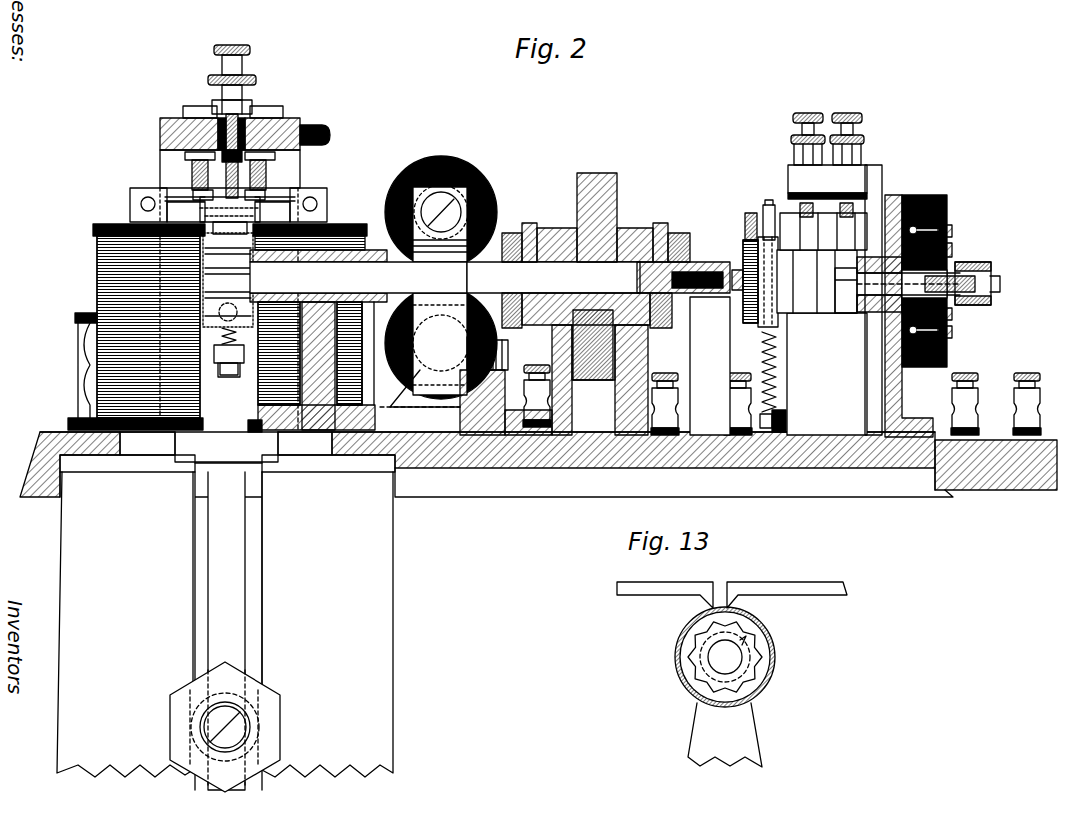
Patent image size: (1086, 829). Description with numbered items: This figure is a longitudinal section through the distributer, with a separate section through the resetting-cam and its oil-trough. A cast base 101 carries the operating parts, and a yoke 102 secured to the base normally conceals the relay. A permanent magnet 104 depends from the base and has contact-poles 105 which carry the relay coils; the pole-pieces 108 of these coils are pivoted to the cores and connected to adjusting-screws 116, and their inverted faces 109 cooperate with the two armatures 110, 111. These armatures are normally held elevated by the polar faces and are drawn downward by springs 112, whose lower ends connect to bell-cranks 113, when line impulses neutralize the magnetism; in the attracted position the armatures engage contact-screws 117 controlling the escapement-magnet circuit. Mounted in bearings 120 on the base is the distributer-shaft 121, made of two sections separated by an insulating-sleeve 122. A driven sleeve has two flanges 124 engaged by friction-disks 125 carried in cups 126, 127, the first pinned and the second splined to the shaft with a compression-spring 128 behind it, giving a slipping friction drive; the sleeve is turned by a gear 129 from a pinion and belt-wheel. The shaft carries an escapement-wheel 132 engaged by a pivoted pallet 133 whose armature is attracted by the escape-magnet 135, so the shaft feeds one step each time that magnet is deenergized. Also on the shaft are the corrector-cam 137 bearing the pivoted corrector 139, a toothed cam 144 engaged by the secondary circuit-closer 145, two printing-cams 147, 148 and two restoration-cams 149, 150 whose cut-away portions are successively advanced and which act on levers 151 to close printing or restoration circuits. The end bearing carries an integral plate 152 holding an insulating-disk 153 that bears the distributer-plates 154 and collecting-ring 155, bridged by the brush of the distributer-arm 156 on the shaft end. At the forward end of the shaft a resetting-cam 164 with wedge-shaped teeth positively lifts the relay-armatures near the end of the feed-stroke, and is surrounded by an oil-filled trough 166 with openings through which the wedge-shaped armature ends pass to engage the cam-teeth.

In FIG. 2, the cast base 101 is at (538, 473).
In FIG. 2, the yoke 102 is at (162, 140).
In FIG. 2, the permanent magnet 104 is at (208, 623).
In FIG. 2, the contact-poles 105 is at (226, 447).
In FIG. 2, the pole-pieces 108 is at (130, 200).
In FIG. 2, the inverted faces 109 is at (205, 196).
In FIG. 2, the armature 110 is at (256, 213).
In FIG. 13, the armature 110 is at (665, 588).
In FIG. 13, the armature 111 is at (787, 588).
In FIG. 2, the springs 112 is at (244, 350).
In FIG. 2, the bell-cranks 113 is at (224, 380).
In FIG. 2, the adjusting-screws 116 is at (231, 153).
In FIG. 2, the contact-screws 117 is at (242, 67).
In FIG. 2, the bearings 120 is at (858, 314).
In FIG. 2, the distributer-shaft 121 is at (598, 277).
In FIG. 2, the insulating-sleeve 122 is at (700, 300).
In FIG. 2, the flanges 124 is at (532, 222).
In FIG. 2, the friction-disks 125 is at (514, 232).
In FIG. 2, the cup 126 is at (506, 300).
In FIG. 2, the cup 127 is at (680, 316).
In FIG. 2, the compression-spring 128 is at (632, 250).
In FIG. 2, the gear 129 is at (597, 208).
In FIG. 2, the escapement-wheel 132 is at (358, 277).
In FIG. 2, the pallet 133 is at (444, 381).
In FIG. 2, the escape-magnet 135 is at (450, 165).
In FIG. 2, the corrector-cam 137 is at (750, 320).
In FIG. 2, the corrector 139 is at (748, 214).
In FIG. 2, the cam 144 is at (768, 325).
In FIG. 2, the secondary circuit-closer 145 is at (769, 204).
In FIG. 2, the printing-cam 147 is at (778, 345).
In FIG. 2, the printing-cam 148 is at (830, 314).
In FIG. 2, the restoration-cam 149 is at (810, 300).
In FIG. 2, the restoration-cam 150 is at (843, 300).
In FIG. 2, the levers 151 is at (828, 243).
In FIG. 2, the plate 152 is at (900, 196).
In FIG. 2, the insulating-disk 153 is at (940, 204).
In FIG. 2, the distributer-plates 154 is at (952, 232).
In FIG. 2, the collecting-ring 155 is at (952, 252).
In FIG. 2, the distributer-arm 156 is at (985, 266).
In FIG. 2, the resetting-cam 164 is at (228, 280).
In FIG. 13, the resetting-cam 164 is at (754, 654).
In FIG. 2, the trough 166 is at (264, 305).
In FIG. 13, the trough 166 is at (774, 634).